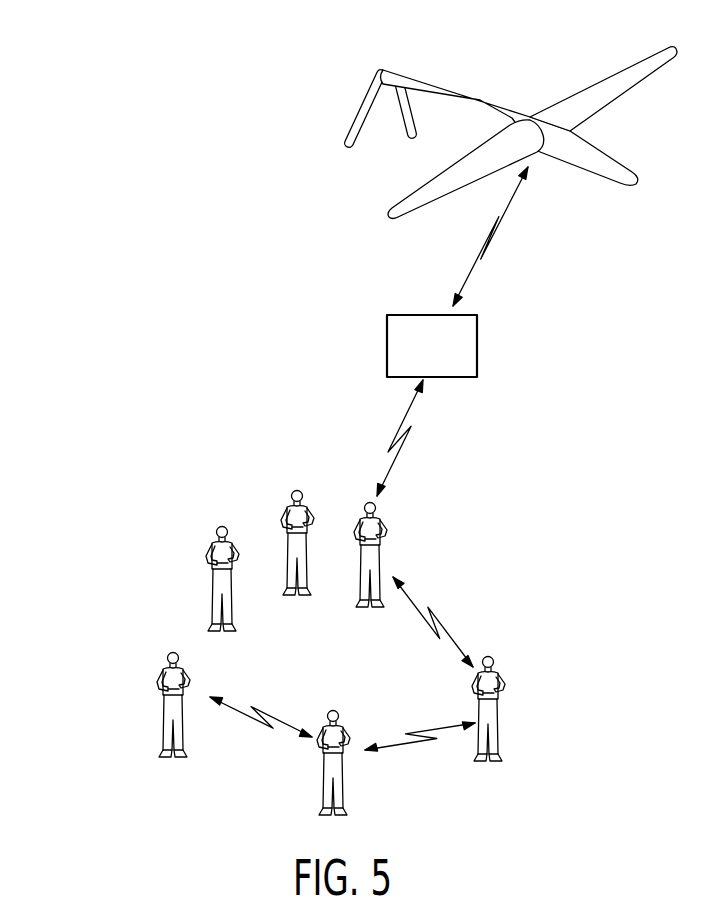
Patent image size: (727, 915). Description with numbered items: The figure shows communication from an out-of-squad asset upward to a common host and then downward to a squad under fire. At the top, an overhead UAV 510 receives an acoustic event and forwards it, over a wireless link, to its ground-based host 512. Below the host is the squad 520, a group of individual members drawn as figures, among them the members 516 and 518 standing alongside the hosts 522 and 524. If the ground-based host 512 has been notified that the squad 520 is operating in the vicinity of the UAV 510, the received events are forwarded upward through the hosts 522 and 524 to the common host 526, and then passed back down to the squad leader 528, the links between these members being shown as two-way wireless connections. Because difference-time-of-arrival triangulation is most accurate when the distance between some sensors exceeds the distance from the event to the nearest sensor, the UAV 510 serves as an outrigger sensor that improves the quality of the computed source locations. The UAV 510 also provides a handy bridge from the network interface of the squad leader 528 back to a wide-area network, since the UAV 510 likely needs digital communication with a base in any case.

The overhead UAV 510 is at (573, 89).
The ground-based host 512 is at (387, 348).
The squad 520 is at (165, 443).
The user 516 is at (222, 526).
The user 518 is at (294, 491).
The host 522 is at (367, 503).
The host 524 is at (494, 658).
The common host 526 is at (329, 711).
The squad leader 528 is at (169, 655).